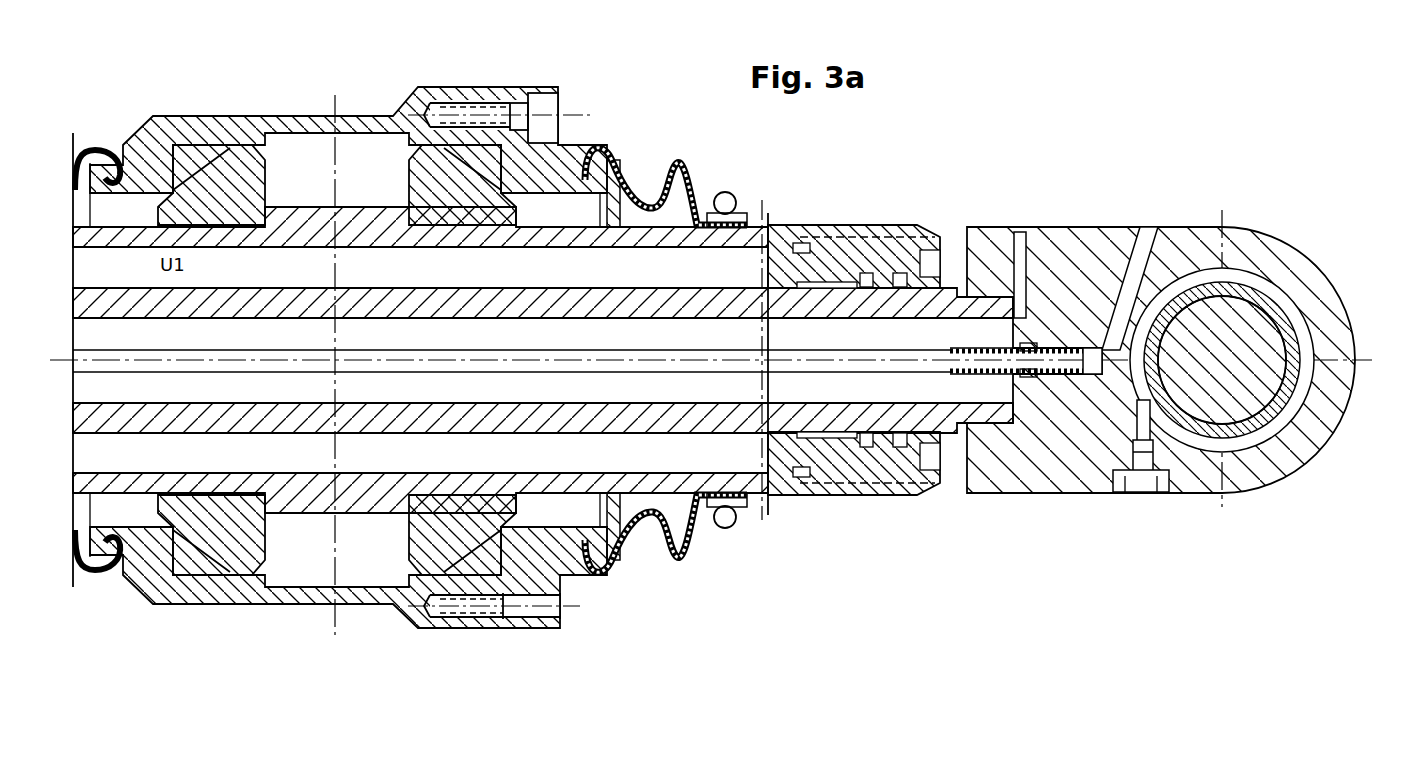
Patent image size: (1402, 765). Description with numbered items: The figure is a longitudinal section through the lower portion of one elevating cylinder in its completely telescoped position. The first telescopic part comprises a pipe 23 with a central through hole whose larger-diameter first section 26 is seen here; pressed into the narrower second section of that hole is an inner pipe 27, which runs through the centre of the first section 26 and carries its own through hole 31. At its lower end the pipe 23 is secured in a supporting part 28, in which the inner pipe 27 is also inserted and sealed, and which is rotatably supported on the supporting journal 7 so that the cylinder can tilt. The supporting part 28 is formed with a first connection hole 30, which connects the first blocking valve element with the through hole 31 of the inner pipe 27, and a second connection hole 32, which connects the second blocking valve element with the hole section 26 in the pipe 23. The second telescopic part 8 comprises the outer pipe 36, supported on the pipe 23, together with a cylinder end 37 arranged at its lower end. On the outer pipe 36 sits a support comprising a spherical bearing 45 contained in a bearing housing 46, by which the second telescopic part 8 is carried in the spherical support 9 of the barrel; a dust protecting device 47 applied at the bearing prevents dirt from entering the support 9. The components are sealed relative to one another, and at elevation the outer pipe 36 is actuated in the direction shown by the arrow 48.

The supporting journal 7 is at (1252, 333).
The second telescopic part 8 is at (800, 215).
The spherical support 9 is at (574, 90).
The pipe 23 is at (713, 298).
The first section of the hole 26 is at (640, 327).
The inner pipe 27 is at (953, 352).
The supporting part 28 is at (1243, 245).
The first connection hole 30 is at (1130, 257).
The through hole of the inner pipe 31 is at (993, 363).
The second connection hole 32 is at (1020, 235).
The outer pipe 36 is at (667, 483).
The cylinder end 37 is at (868, 257).
The spherical bearing 45 is at (200, 163).
The bearing housing 46 is at (178, 135).
The dust protecting device 47 is at (633, 162).
The arrow 48 is at (555, 52).